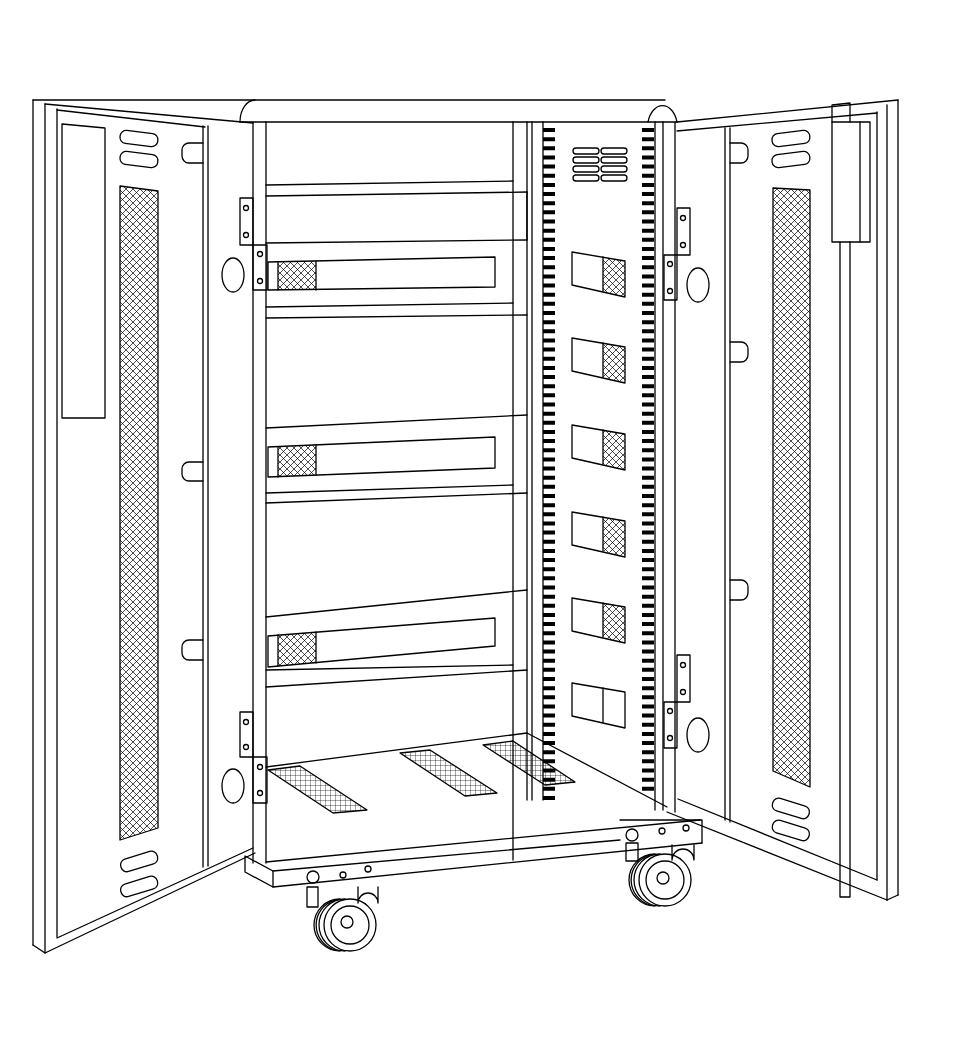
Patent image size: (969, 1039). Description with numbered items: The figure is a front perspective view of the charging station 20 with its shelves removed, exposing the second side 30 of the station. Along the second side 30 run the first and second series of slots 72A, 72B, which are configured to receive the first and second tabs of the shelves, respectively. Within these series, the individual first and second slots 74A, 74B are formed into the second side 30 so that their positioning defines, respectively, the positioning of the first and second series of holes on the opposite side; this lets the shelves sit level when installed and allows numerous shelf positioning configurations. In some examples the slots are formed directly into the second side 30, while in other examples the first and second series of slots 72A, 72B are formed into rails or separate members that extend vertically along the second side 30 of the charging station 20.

The charging station 20 is at (672, 59).
The second side 30 is at (548, 516).
The first series of slots 72A is at (652, 127).
The second series of slots 72B is at (546, 127).
The first slots 74A is at (648, 390).
The second slots 74B is at (543, 356).